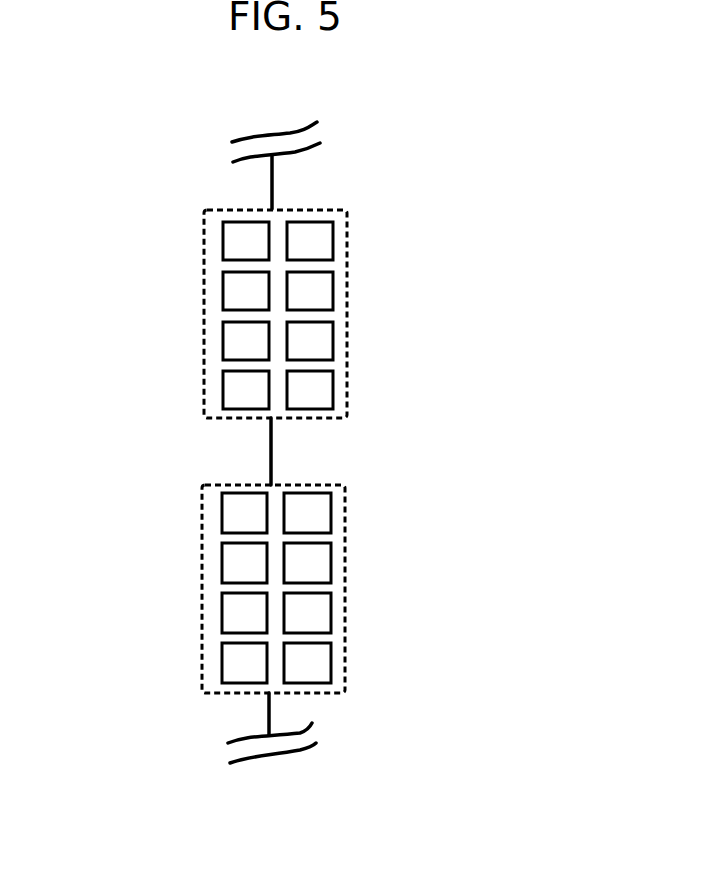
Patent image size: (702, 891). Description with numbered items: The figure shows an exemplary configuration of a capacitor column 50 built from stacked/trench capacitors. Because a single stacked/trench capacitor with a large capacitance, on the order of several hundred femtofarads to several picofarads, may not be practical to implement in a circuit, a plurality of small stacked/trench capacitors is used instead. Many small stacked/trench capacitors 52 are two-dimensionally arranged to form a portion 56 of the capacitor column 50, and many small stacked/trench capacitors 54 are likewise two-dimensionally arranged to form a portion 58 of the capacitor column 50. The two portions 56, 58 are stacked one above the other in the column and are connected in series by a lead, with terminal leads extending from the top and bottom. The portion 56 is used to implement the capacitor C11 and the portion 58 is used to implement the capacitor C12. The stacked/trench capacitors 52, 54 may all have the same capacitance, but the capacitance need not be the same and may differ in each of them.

The capacitor column 50 is at (460, 132).
The stacked/trench capacitor 52 is at (325, 238).
The stacked/trench capacitor 54 is at (325, 508).
The portion of capacitor column 56 is at (287, 314).
The portion of capacitor column 58 is at (285, 589).
The capacitor C11 is at (350, 313).
The capacitor C12 is at (347, 592).